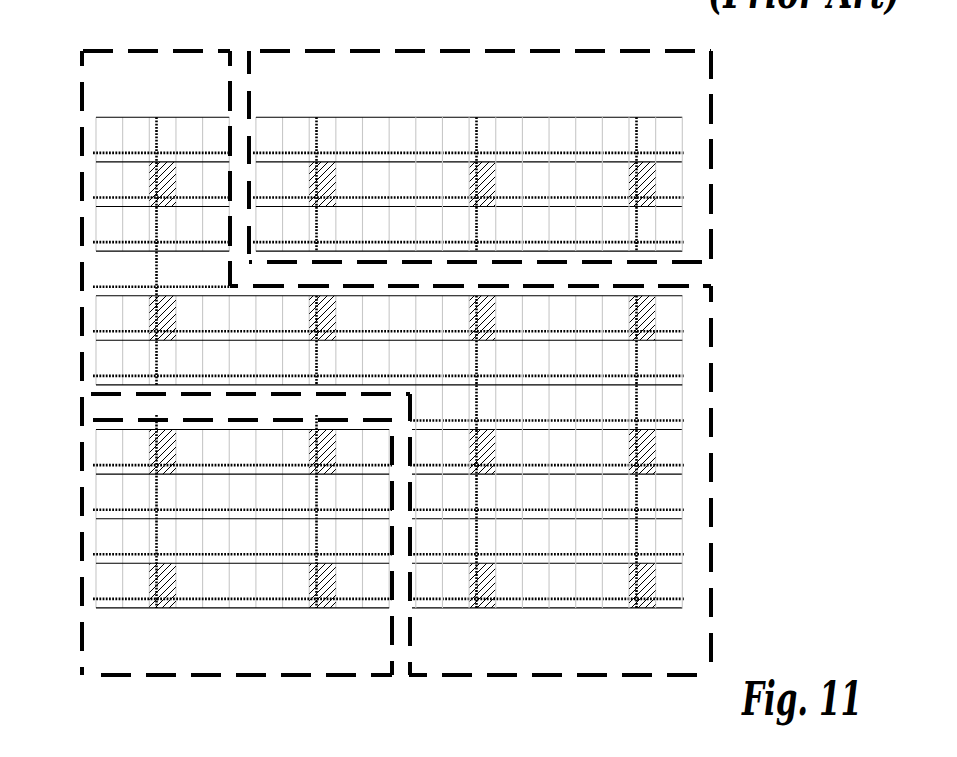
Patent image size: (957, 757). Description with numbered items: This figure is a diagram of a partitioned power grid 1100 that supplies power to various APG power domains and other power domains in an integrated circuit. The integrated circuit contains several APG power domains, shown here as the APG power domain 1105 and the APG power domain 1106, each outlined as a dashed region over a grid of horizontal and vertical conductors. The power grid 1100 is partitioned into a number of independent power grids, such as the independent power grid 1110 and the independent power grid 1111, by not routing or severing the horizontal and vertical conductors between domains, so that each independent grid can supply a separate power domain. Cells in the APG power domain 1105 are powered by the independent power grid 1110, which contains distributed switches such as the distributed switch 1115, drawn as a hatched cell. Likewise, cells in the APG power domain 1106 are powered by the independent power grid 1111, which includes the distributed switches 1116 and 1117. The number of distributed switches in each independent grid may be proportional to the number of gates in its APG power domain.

The power grid 1100 is at (87, 14).
The APG power domain 1105 is at (715, 78).
The independent power grid 1110 is at (680, 130).
The distributed switch 1115 is at (655, 182).
The APG power domain 1106 is at (713, 345).
The independent power grid 1111 is at (680, 397).
The distributed switch 1117 is at (655, 450).
The distributed switch 1116 is at (655, 580).